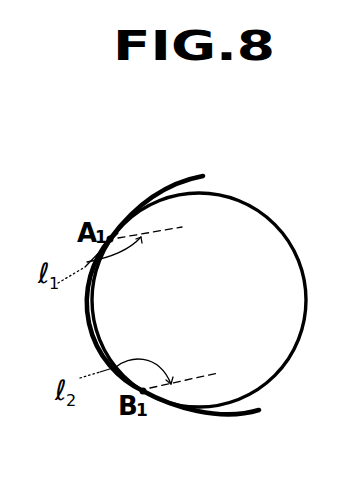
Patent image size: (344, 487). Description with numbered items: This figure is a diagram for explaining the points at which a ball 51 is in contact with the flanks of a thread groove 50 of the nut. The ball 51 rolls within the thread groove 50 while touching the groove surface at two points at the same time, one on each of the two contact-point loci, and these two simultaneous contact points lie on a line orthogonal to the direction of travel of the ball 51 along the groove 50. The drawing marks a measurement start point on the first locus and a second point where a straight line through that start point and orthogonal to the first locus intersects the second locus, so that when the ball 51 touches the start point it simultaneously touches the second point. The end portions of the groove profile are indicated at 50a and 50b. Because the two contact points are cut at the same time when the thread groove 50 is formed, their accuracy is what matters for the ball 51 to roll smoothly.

The thread groove 50 is at (161, 285).
The one end portion of adhesive tape 50a is at (134, 214).
The other end portion of adhesive tape 50b is at (183, 410).
The ball 51 is at (244, 223).